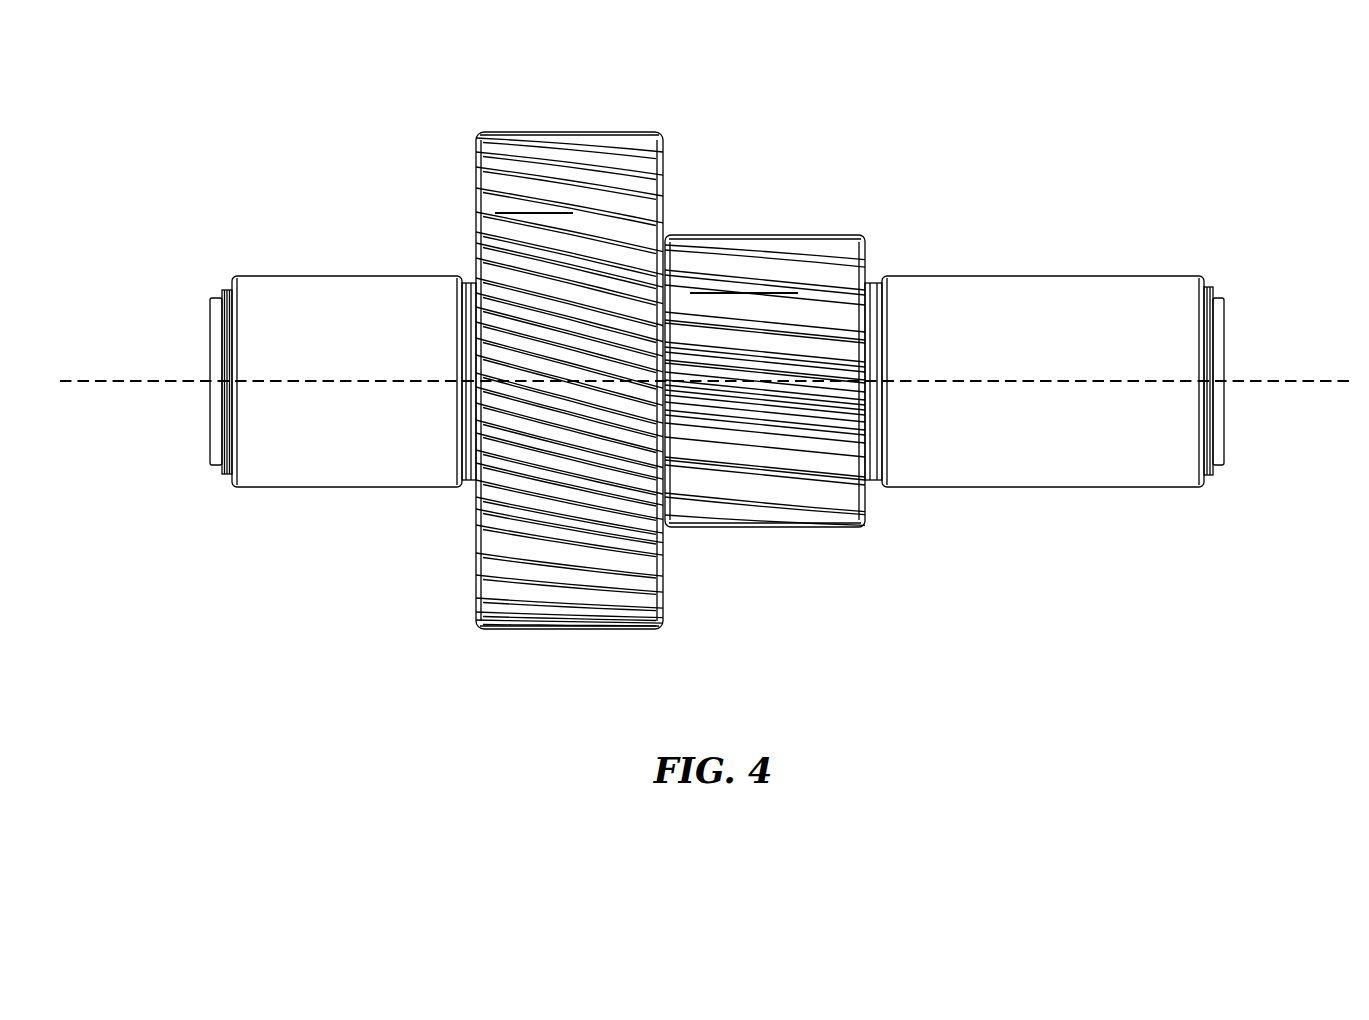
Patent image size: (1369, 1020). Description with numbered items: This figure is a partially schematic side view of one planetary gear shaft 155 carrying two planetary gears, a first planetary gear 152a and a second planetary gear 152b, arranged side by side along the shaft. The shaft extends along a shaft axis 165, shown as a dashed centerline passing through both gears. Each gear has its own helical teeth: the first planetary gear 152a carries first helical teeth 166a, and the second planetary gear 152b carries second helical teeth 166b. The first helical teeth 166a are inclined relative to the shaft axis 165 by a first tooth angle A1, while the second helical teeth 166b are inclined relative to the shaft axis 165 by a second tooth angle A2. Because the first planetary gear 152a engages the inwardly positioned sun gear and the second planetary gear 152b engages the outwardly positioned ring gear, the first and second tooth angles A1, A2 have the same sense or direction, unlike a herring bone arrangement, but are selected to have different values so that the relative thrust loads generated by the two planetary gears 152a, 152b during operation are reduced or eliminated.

The first planetary gear 152a is at (536, 390).
The second planetary gear 152b is at (765, 391).
The planetary gear shaft 155 is at (345, 487).
The shaft axis 165 is at (1290, 380).
The first helical teeth 166a is at (588, 150).
The second helical teeth 166b is at (795, 257).
The first tooth angle A1 is at (498, 213).
The second tooth angle A2 is at (690, 293).